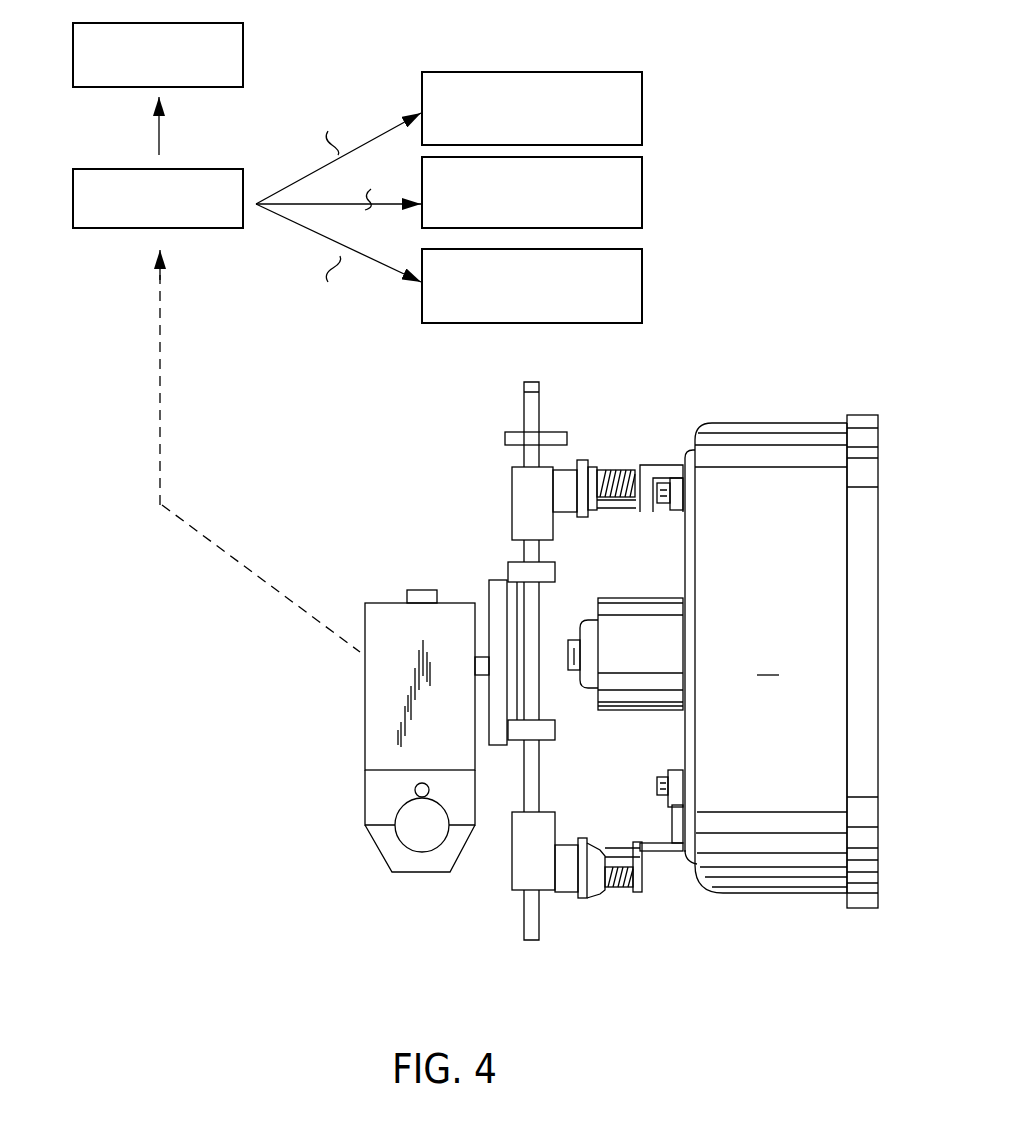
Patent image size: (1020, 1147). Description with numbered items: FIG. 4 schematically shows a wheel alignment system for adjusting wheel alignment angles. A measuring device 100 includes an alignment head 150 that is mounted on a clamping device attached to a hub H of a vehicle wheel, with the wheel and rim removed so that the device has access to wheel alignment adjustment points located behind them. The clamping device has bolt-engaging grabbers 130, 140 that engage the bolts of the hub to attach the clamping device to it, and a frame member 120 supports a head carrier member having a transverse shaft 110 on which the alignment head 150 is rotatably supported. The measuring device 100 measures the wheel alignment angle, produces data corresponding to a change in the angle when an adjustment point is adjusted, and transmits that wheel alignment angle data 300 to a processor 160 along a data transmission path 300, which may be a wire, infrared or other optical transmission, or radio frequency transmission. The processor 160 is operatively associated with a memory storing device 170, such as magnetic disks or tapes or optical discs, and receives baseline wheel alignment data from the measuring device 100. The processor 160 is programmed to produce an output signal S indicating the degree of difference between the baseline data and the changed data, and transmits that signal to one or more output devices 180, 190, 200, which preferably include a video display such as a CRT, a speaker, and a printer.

The measuring device 100 is at (414, 483).
The transverse shaft 110 is at (483, 655).
The frame member 120 is at (540, 620).
The bolt-engaging grabber 130 is at (659, 446).
The bolt-engaging grabber 140 is at (661, 868).
The alignment head 150 is at (368, 705).
The processor 160 is at (73, 196).
The memory storing device 170 is at (243, 52).
The output device 180 is at (642, 101).
The output device 190 is at (642, 186).
The output device 200 is at (642, 280).
The data transmission path 300 is at (160, 470).